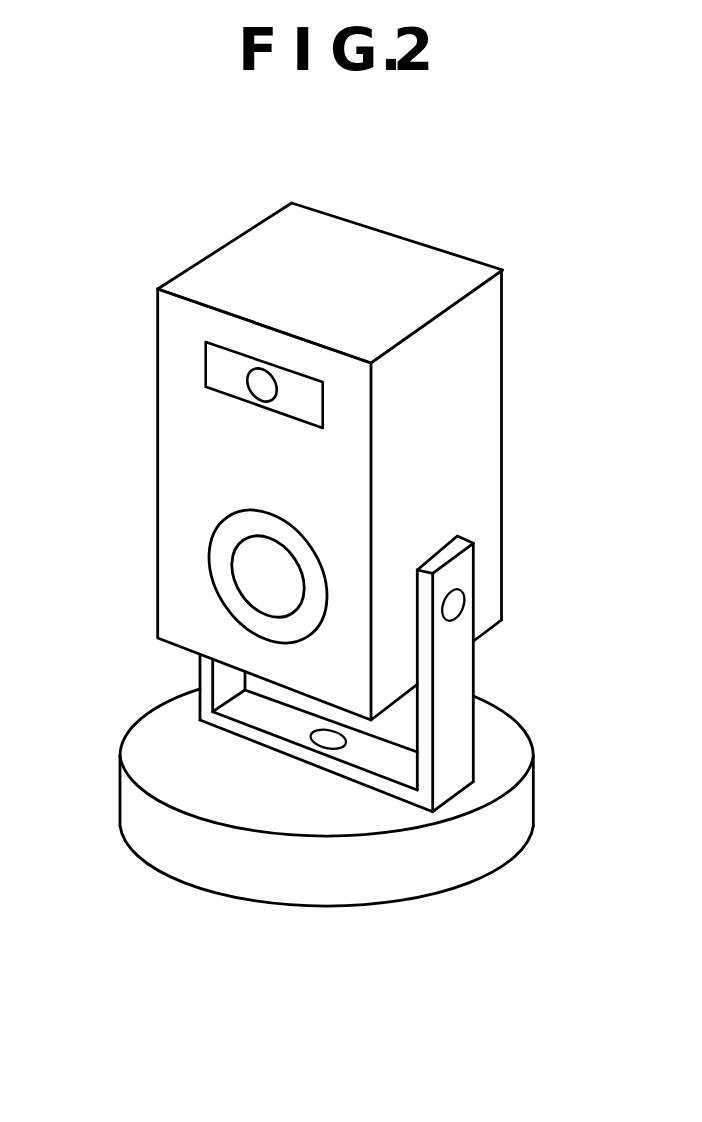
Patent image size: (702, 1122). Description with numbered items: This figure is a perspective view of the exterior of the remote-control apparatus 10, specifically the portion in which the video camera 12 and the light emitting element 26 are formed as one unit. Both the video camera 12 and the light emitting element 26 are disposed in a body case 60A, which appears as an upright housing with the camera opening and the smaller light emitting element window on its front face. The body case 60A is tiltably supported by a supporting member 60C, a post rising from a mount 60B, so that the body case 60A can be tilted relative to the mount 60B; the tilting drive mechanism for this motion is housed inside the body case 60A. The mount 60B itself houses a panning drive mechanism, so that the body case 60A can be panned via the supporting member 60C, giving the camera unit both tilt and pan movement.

The remote-control apparatus 10 is at (517, 232).
The video camera 12 is at (252, 580).
The light emitting element 26 is at (259, 391).
The body case 60A is at (455, 460).
The mount 60B is at (348, 868).
The supporting member 60C is at (450, 668).